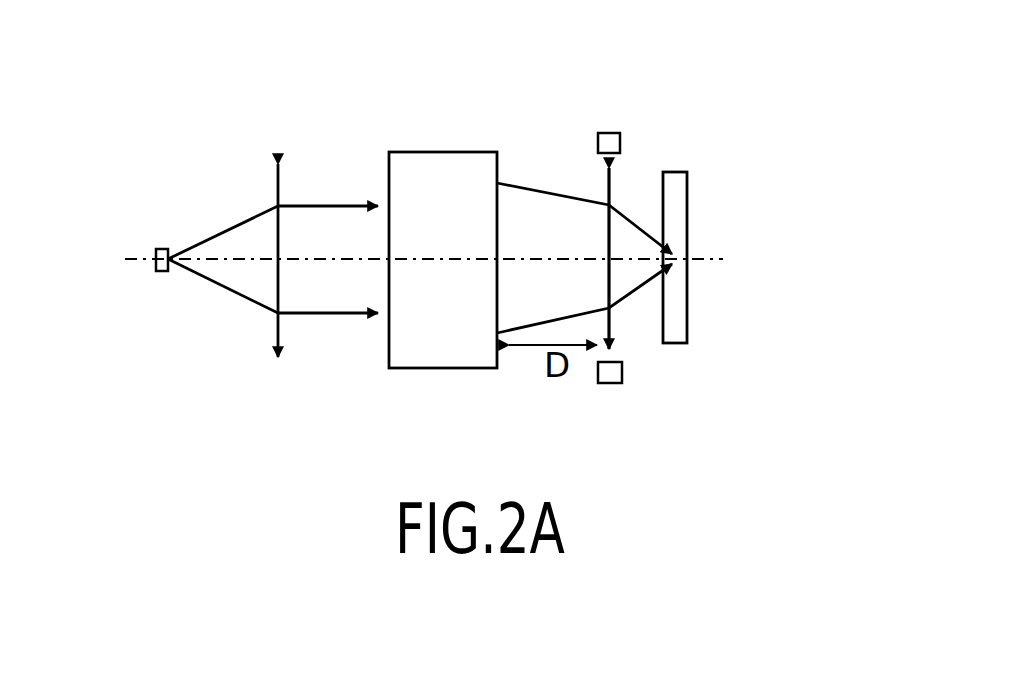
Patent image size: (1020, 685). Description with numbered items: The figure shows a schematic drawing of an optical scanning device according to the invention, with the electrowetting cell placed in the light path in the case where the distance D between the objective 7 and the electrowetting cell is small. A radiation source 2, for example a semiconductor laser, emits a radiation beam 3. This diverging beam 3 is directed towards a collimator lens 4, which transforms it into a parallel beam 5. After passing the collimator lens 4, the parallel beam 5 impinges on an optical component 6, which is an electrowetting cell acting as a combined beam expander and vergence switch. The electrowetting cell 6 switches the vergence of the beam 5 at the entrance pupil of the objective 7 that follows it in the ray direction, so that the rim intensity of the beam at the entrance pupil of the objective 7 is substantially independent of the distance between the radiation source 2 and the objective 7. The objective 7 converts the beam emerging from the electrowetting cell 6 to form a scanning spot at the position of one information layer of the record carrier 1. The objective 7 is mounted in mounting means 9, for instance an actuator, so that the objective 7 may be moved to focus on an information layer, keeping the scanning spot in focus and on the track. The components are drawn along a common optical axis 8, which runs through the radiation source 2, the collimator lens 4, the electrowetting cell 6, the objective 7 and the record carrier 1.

The record carrier 1 is at (680, 182).
The radiation source 2 is at (157, 250).
The radiation beam 3 is at (233, 228).
The collimator lens 4 is at (275, 185).
The parallel beam 5 is at (363, 203).
The optical component 6 is at (467, 165).
The objective 7 is at (612, 187).
The optical axis 8 is at (722, 258).
The mounting means 9 is at (610, 145).